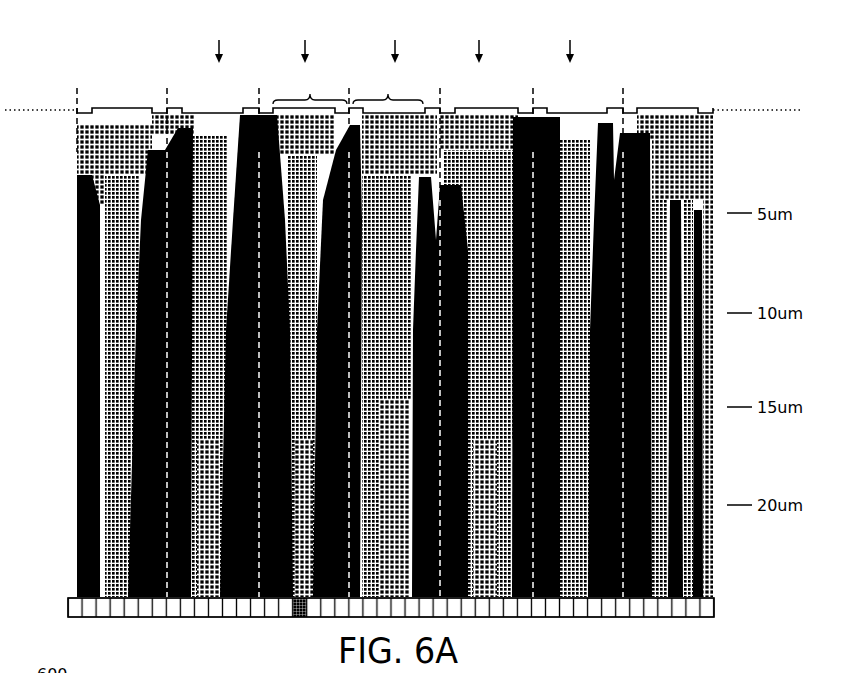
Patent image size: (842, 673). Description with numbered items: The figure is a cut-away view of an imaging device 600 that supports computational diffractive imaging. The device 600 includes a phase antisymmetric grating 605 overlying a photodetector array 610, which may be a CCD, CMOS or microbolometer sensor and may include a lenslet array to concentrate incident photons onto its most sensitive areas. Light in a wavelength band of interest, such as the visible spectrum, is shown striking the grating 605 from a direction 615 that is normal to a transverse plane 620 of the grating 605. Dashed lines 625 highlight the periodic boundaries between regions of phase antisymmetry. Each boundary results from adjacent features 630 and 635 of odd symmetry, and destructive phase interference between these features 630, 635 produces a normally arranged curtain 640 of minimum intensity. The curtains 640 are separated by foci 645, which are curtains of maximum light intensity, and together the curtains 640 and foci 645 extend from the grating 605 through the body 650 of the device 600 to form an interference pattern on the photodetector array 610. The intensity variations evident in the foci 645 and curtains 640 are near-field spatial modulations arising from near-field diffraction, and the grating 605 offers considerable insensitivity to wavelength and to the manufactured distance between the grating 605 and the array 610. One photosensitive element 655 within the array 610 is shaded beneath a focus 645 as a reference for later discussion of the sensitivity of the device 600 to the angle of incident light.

The imaging device 600 is at (194, 36).
The phase antisymmetric grating 605 is at (657, 108).
The photodetector array 610 is at (714, 606).
The direction 615 is at (305, 45).
The transverse plane 620 is at (60, 109).
The dashed lines 625 is at (167, 98).
The feature of odd symmetry 630 is at (310, 89).
The feature of odd symmetry 635 is at (388, 89).
The curtain of minimum intensity 640 is at (460, 585).
The focus 645 is at (485, 527).
The body 650 is at (63, 118).
The photosensitive element 655 is at (300, 618).